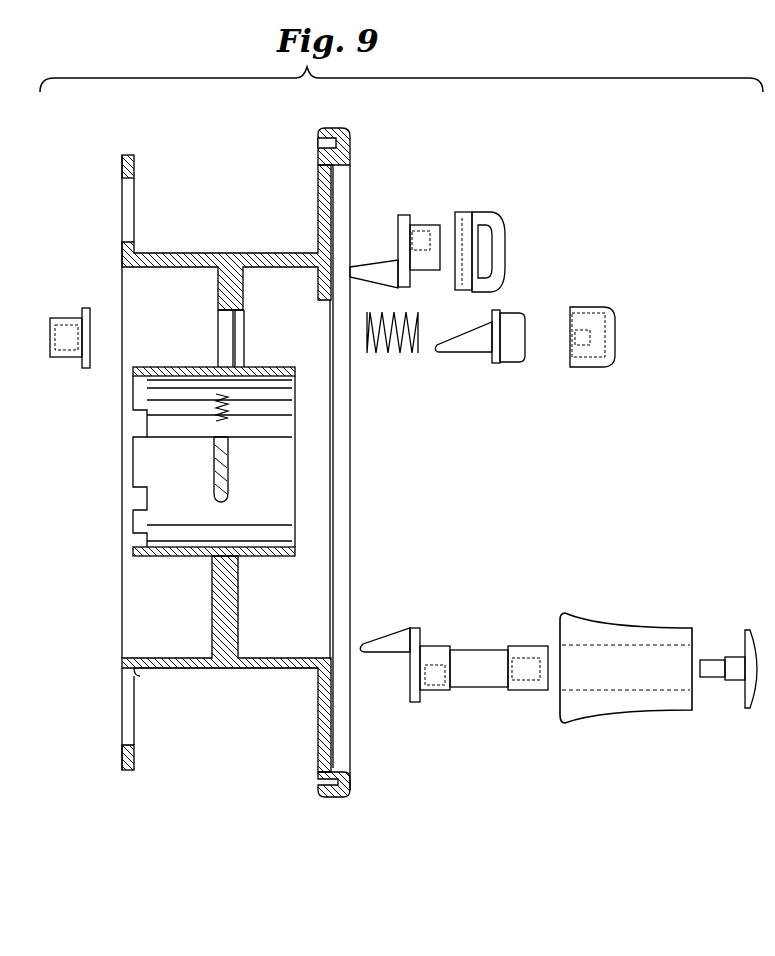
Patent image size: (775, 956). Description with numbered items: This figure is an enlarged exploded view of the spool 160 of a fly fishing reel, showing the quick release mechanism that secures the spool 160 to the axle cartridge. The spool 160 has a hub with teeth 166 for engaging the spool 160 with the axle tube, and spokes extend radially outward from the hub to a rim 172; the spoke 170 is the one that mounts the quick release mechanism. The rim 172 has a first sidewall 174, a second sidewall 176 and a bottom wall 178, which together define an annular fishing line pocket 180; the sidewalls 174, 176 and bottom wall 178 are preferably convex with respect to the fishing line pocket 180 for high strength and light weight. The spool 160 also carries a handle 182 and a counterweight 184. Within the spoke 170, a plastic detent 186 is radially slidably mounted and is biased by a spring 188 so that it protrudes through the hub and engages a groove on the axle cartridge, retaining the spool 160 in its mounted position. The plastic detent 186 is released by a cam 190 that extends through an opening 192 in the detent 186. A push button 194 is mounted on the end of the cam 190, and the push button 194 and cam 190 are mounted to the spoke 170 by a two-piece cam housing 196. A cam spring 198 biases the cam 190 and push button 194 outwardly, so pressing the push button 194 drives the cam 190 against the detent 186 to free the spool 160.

The spool 160 is at (113, 152).
The teeth 166 is at (138, 468).
The spoke 170 is at (218, 295).
The rim 172 is at (355, 746).
The first sidewall 174 is at (134, 756).
The second sidewall 176 is at (310, 735).
The bottom wall 178 is at (175, 666).
The annular fishing line pocket 180 is at (239, 737).
The handle 182 is at (520, 626).
The counterweight 184 is at (494, 206).
The plastic detent 186 is at (230, 491).
The spring 188 is at (229, 403).
The cam 190 is at (462, 352).
The opening 192 is at (232, 463).
The push button 194 is at (516, 363).
The two-piece cam housing 196 is at (65, 318).
The cam spring 198 is at (397, 355).